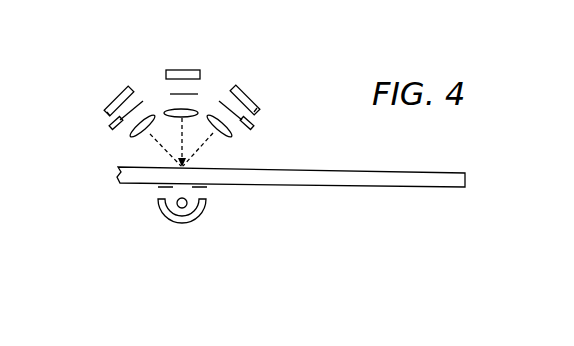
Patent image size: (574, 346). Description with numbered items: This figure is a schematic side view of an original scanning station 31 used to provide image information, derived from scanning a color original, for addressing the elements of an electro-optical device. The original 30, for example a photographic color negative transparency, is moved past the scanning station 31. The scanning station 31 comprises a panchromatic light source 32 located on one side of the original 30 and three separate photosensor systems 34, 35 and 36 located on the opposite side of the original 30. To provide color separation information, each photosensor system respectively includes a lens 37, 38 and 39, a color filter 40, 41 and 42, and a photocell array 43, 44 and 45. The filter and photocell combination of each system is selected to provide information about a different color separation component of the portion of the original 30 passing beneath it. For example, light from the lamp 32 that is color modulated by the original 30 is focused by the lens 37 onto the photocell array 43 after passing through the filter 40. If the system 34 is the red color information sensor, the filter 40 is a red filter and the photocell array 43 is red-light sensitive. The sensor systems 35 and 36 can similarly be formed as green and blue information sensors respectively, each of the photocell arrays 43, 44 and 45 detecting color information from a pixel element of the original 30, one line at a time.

The original 30 is at (365, 171).
The scanning station 31 is at (121, 191).
The panchromatic light source 32 is at (202, 206).
The photosensor system 34 is at (109, 89).
The photosensor system 35 is at (183, 62).
The photosensor system 36 is at (254, 89).
The lens 37 is at (134, 128).
The lens 38 is at (187, 115).
The lens 39 is at (232, 137).
The color filter 40 is at (111, 127).
The color filter 41 is at (197, 93).
The color filter 42 is at (243, 120).
The photocell array 43 is at (104, 112).
The photocell array 44 is at (200, 69).
The photocell array 45 is at (258, 108).